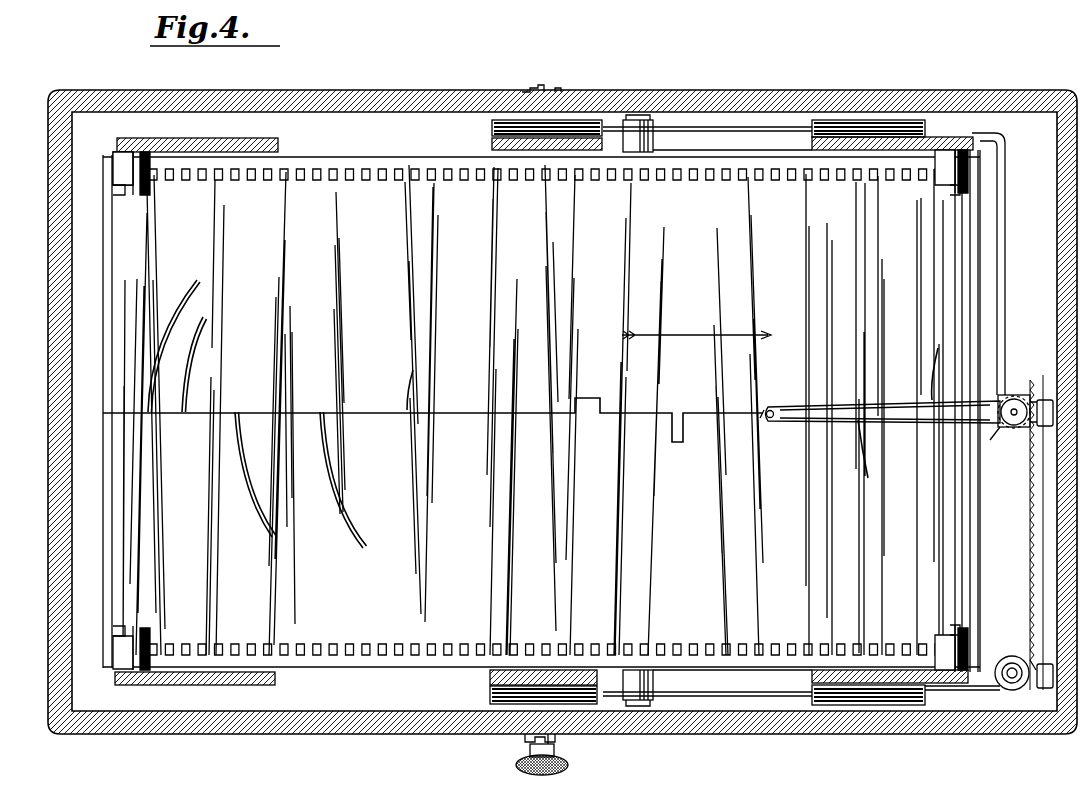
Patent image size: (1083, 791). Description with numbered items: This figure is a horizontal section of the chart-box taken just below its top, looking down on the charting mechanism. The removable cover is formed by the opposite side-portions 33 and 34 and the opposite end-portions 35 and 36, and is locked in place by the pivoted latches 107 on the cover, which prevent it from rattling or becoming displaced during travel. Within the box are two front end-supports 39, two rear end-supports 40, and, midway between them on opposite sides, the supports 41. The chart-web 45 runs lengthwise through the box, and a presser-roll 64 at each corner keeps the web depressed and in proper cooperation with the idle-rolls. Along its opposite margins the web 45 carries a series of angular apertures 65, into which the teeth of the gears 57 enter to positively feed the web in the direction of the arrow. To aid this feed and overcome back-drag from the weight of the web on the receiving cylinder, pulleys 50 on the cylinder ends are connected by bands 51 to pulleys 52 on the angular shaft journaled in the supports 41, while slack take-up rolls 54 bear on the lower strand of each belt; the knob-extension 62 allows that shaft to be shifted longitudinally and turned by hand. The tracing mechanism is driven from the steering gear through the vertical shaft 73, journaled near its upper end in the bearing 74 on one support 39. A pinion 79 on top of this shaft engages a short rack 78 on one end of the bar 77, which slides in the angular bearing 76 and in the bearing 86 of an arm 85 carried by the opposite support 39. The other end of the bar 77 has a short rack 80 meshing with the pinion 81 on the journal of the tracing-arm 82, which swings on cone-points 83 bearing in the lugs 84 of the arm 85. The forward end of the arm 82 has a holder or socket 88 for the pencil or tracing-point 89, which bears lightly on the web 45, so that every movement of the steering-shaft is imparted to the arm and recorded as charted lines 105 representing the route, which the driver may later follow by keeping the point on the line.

The side-portion 33 is at (806, 713).
The side-portion 34 is at (736, 100).
The end-portion 35 is at (1066, 290).
The end-portion 36 is at (48, 322).
The front end-supports 39 is at (812, 144).
The rear end-supports 40 is at (278, 145).
The supports 41 is at (492, 144).
The web 45 is at (533, 410).
The pulleys 50 is at (862, 122).
The bands 51 is at (727, 127).
The pulleys 52 is at (582, 125).
The slack take-up rolls 54 is at (636, 152).
The gears 57 is at (564, 181).
The knob-extension 62 is at (568, 766).
The presser-roll 64 is at (140, 175).
The angular apertures 65 is at (791, 181).
The vertical shaft 73 is at (1012, 680).
The bearing 74 is at (977, 692).
The angular bearing 76 is at (1034, 668).
The bar 77 is at (1036, 523).
The short rack 78 is at (1034, 660).
The pinion 79 is at (1025, 690).
The short rack 80 is at (1022, 428).
The pinion 81 is at (1000, 427).
The arm 82 is at (890, 410).
The cone-points 83 is at (1016, 408).
The lugs 84 is at (1014, 395).
The arm 85 is at (1005, 250).
The bearing 86 is at (1044, 428).
The holder or socket 88 is at (764, 420).
The tracing-point 89 is at (783, 397).
The charted lines 105 is at (520, 414).
The pivoted latches 107 is at (530, 92).